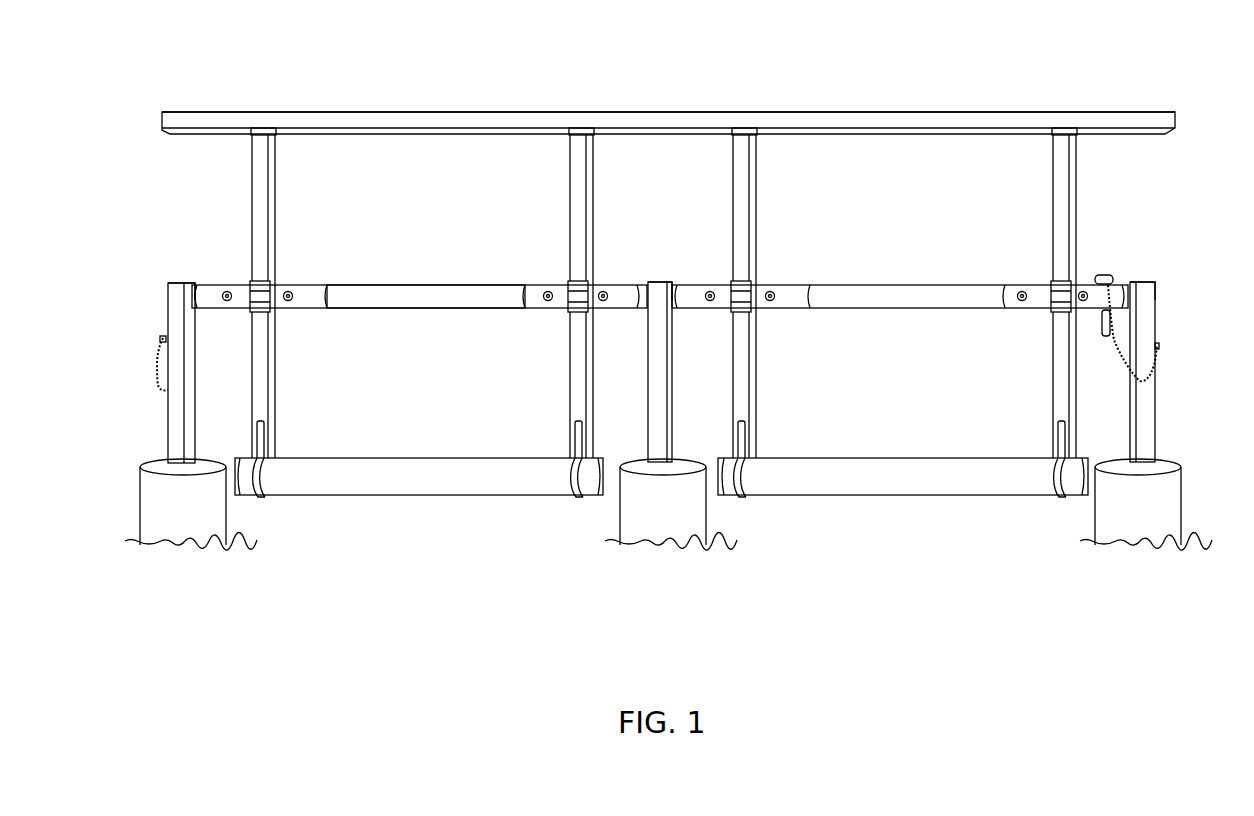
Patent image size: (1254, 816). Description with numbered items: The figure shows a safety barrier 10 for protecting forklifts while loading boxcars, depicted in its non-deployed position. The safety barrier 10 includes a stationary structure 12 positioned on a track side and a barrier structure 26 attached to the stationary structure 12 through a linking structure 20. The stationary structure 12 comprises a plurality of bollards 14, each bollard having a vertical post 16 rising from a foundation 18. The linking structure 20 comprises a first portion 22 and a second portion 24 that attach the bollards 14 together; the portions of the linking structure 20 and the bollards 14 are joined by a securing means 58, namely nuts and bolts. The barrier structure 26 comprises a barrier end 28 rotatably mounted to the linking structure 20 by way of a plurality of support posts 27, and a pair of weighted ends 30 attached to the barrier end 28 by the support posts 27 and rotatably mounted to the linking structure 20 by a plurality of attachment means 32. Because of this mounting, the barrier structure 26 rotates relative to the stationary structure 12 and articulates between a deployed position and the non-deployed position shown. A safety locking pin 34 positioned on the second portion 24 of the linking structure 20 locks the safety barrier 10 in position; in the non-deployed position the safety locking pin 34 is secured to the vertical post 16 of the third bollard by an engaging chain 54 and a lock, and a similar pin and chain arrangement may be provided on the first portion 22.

The safety barrier 10 is at (689, 50).
The stationary structure 12 is at (647, 327).
The bollards 14 is at (172, 405).
The vertical post 16 is at (178, 317).
The foundation 18 is at (150, 530).
The linking structure 20 is at (352, 278).
The first portion 22 is at (370, 284).
The second portion 24 is at (977, 269).
The barrier structure 26 is at (968, 100).
The support posts 27 is at (257, 156).
The barrier end 28 is at (328, 123).
The weighted ends 30 is at (398, 480).
The attachment means 32 is at (252, 285).
The safety locking pin 34 is at (1112, 277).
The engaging chain 54 is at (158, 350).
The securing means 58 is at (226, 290).